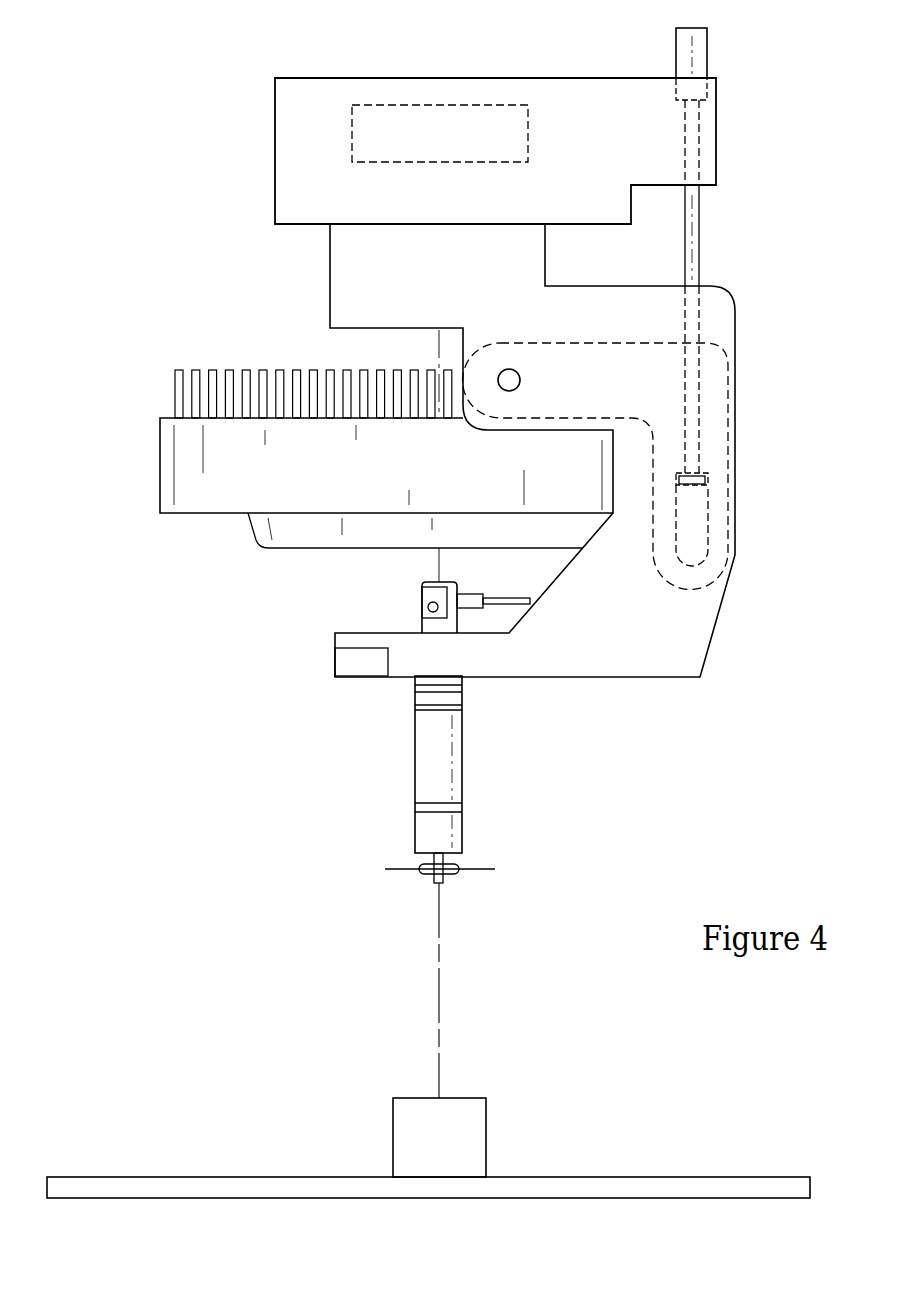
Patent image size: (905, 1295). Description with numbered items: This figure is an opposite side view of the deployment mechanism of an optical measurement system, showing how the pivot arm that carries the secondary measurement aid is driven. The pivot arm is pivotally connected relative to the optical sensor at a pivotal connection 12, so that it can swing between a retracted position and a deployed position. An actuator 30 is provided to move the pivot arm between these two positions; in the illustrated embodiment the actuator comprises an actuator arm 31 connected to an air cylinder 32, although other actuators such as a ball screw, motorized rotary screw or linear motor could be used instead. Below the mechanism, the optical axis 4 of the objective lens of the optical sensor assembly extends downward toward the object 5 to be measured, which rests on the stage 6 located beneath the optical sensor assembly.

The pivotal connection 12 is at (509, 380).
The actuator 30 is at (708, 530).
The actuator arm 31 is at (699, 405).
The air cylinder 32 is at (707, 43).
The optical axis 4 is at (439, 986).
The object 5 is at (486, 1136).
The stage 6 is at (763, 1177).